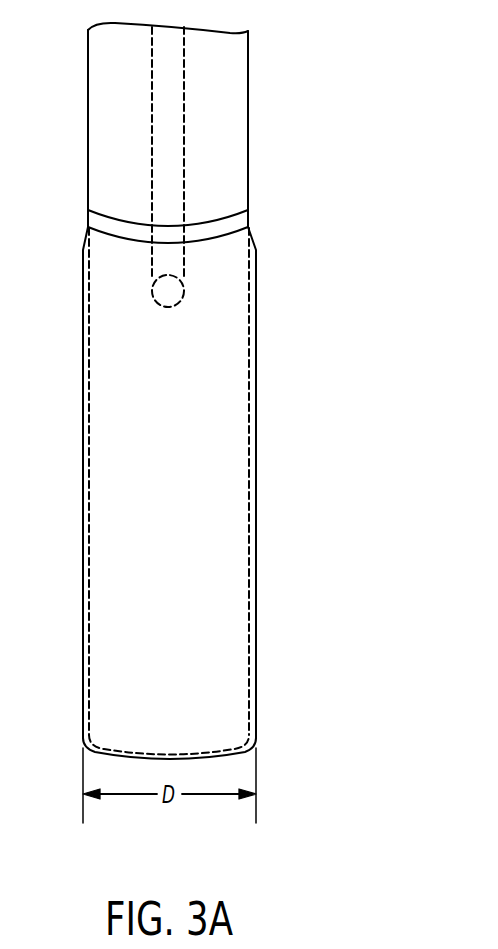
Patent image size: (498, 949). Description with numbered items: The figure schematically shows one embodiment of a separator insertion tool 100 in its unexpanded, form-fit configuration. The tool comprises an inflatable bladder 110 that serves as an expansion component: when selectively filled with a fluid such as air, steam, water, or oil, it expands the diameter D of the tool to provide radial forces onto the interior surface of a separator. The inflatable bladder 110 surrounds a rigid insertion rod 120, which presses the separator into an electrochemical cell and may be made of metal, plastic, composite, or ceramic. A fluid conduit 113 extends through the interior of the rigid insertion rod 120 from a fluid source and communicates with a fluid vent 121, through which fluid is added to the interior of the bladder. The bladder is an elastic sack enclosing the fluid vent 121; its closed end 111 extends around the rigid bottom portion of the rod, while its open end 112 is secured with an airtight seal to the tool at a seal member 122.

The separator insertion tool 100 is at (336, 97).
The inflatable bladder 110 is at (256, 370).
The closed end 111 is at (237, 750).
The open end 112 is at (251, 227).
The fluid conduit 113 is at (152, 98).
The rigid insertion rod 120 is at (88, 373).
The fluid vent 121 is at (148, 288).
The seal member 122 is at (132, 233).